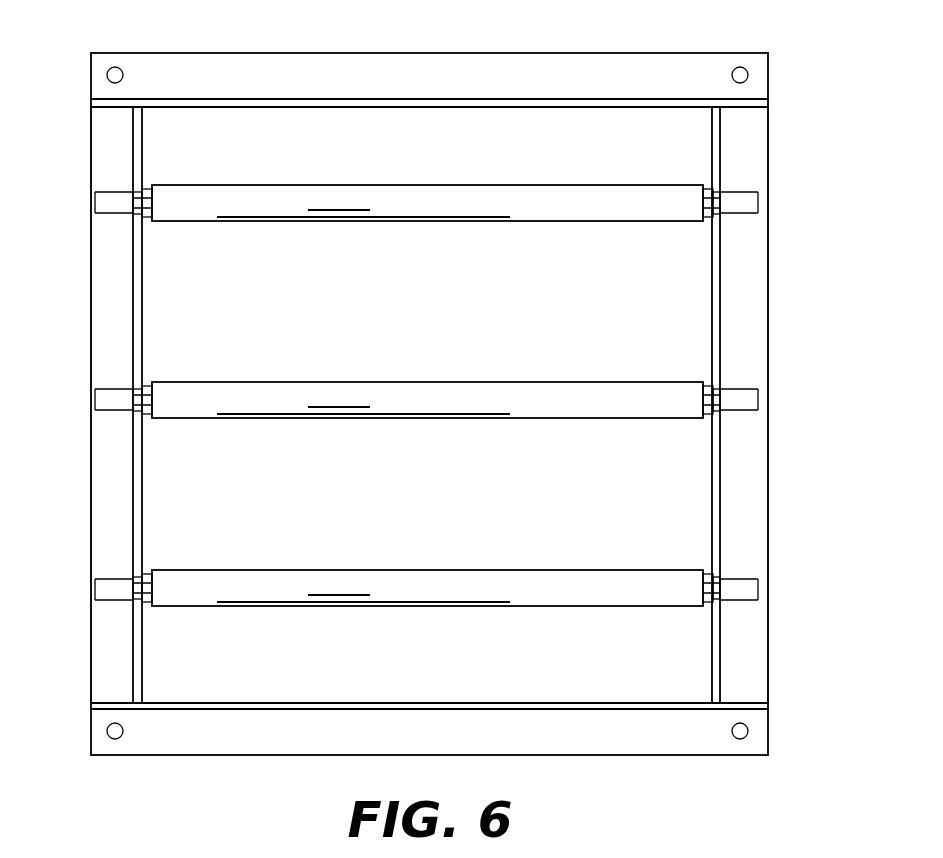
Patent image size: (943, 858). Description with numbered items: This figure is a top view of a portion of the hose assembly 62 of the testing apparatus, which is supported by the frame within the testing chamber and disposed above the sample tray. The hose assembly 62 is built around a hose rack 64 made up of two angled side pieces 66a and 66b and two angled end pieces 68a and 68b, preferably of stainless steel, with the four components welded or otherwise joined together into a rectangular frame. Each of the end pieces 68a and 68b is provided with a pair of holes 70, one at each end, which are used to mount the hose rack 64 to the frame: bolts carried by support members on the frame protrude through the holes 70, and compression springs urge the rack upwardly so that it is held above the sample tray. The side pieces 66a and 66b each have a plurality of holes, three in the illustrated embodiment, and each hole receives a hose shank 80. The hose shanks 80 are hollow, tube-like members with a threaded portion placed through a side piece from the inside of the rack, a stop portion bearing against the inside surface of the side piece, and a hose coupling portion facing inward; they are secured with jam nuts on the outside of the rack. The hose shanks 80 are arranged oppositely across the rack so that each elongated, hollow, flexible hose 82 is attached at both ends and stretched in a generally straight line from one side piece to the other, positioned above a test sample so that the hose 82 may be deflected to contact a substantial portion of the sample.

The hose assembly 62 is at (811, 88).
The hose rack 64 is at (777, 254).
The side piece 66a is at (767, 582).
The side piece 66b is at (98, 495).
The end piece 68a is at (522, 755).
The end piece 68b is at (533, 53).
The holes 70 is at (107, 77).
The hose shank 80 is at (166, 235).
The hose 82 is at (407, 223).